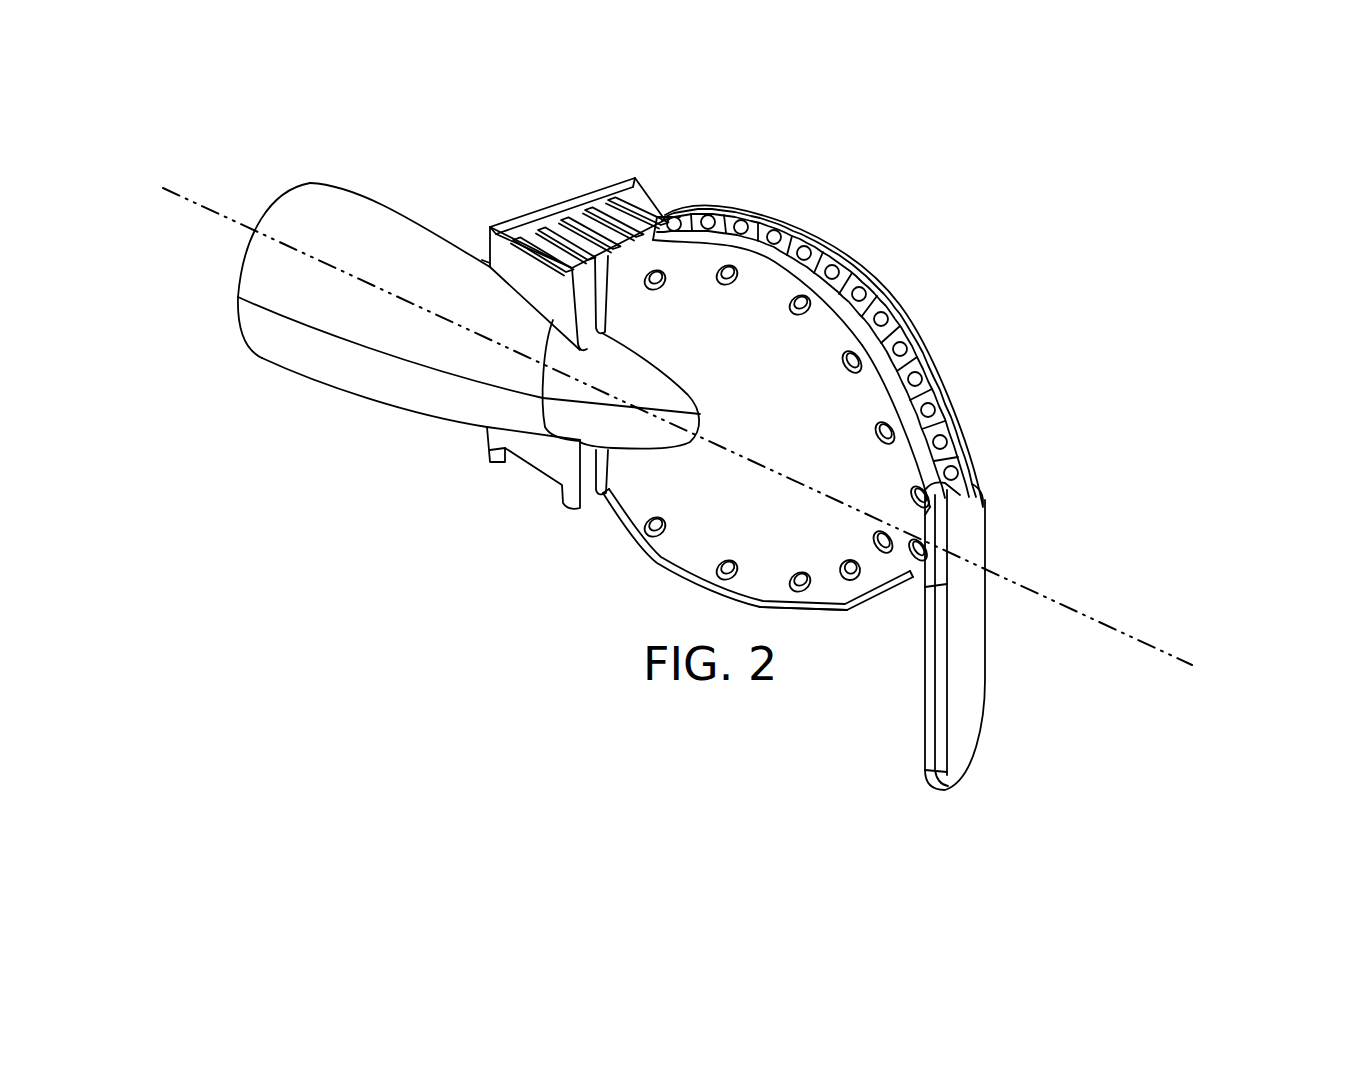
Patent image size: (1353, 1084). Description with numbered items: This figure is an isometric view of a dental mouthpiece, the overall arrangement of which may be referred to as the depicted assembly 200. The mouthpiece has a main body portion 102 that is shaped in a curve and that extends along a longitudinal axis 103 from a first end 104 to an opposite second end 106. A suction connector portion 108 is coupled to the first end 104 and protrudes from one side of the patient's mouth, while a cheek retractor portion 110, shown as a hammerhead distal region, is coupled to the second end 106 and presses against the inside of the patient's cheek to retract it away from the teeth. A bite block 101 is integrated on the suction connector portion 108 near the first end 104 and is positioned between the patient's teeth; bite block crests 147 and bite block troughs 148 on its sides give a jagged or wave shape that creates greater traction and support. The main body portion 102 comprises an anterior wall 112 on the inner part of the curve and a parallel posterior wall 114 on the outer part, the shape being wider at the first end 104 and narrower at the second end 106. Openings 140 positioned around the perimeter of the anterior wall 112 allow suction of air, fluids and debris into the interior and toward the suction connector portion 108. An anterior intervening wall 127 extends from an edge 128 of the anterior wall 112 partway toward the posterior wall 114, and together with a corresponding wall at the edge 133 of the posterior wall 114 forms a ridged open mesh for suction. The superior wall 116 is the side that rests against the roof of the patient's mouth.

The oral appliance assembly 200 is at (887, 153).
The main body portion 102 is at (988, 221).
The longitudinal axis 103 is at (1160, 648).
The first end 104 is at (212, 693).
The second end 106 is at (868, 853).
The suction connector portion 108 is at (332, 193).
The bite block 101 is at (573, 207).
The bite block crests 147 is at (607, 207).
The bite block troughs 148 is at (614, 207).
The anterior wall 112 is at (690, 293).
The posterior wall 114 is at (897, 320).
The anterior intervening wall 127 is at (865, 318).
The edge 128 is at (887, 367).
The edge 133 is at (950, 437).
The superior wall 116 is at (967, 470).
The openings 140 is at (660, 540).
The cheek retractor portion 110 is at (940, 790).